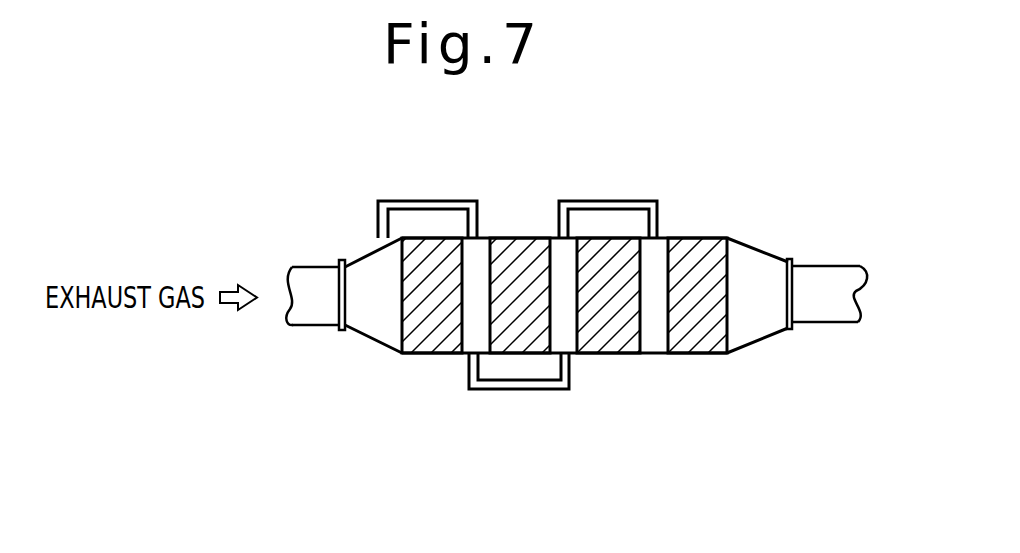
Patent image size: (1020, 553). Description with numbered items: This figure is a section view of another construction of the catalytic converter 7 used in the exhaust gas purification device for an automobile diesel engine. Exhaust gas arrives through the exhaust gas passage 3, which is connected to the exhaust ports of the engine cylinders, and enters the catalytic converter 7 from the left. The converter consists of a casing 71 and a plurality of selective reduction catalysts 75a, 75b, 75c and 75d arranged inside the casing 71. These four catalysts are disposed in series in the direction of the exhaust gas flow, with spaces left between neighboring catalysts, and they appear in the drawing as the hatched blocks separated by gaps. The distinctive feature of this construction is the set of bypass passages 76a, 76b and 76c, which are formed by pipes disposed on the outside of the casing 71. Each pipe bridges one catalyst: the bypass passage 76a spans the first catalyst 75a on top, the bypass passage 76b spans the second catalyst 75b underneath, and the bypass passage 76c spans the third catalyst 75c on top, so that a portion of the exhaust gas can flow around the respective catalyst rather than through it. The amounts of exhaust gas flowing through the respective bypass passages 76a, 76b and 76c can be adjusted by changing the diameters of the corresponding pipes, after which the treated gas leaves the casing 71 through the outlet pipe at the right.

The exhaust gas passage 3 is at (318, 312).
The catalytic converter 7 is at (602, 359).
The casing 71 is at (755, 343).
The selective reduction catalyst 75a is at (417, 349).
The selective reduction catalyst 75b is at (511, 237).
The selective reduction catalyst 75c is at (627, 355).
The selective reduction catalyst 75d is at (713, 355).
The bypass passage 76a is at (433, 200).
The bypass passage 76b is at (520, 392).
The bypass passage 76c is at (615, 200).